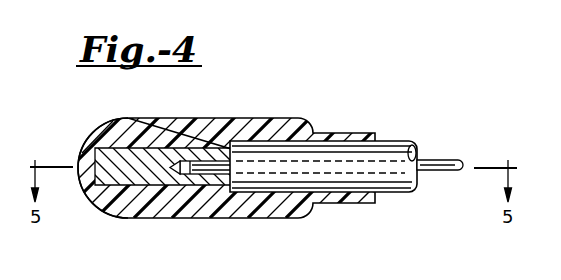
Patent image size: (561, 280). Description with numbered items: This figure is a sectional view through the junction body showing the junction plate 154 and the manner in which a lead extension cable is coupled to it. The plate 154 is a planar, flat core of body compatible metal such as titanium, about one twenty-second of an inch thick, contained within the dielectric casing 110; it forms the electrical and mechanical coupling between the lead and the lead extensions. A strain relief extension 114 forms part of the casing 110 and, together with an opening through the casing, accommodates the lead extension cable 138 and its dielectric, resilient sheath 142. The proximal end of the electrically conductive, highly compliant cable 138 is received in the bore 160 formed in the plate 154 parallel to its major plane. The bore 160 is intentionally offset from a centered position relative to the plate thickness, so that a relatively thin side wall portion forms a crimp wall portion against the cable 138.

The dielectric casing 110 is at (271, 118).
The strain relief extension 114 is at (348, 133).
The cable 138 is at (201, 160).
The sheath 142 is at (400, 142).
The junction plate 154 is at (123, 123).
The bore 160 is at (180, 173).